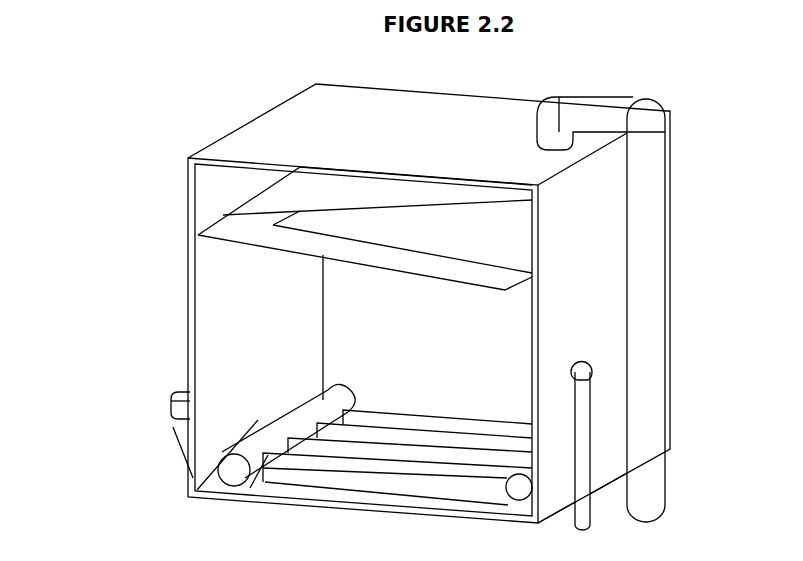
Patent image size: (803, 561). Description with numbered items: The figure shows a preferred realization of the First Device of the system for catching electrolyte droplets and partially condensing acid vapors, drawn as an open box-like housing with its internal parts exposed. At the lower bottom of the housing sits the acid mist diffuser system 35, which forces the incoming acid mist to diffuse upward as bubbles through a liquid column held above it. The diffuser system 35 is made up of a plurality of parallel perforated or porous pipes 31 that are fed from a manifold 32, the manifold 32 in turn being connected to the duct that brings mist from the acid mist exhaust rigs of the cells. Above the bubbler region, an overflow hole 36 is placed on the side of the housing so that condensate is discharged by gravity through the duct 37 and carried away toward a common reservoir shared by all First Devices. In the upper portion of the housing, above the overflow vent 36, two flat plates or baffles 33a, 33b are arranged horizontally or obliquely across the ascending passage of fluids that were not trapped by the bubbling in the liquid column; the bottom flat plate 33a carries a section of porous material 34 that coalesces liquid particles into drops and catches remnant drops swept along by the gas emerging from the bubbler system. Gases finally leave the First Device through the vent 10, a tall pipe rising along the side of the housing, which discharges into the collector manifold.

The vent 10 is at (647, 432).
The perforated or porous pipes 31 is at (332, 463).
The manifold 32 is at (235, 455).
The bottom flat plate 33a is at (468, 270).
The flat plate 33b is at (318, 200).
The section of porous material 34 is at (468, 243).
The acid mist diffuser system 35 is at (302, 399).
The overflow hole 36 is at (578, 356).
The duct 37 is at (590, 412).